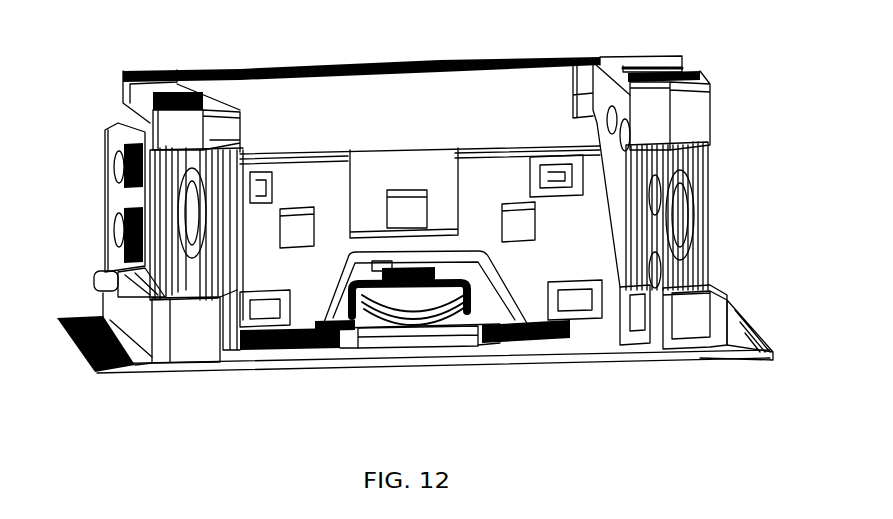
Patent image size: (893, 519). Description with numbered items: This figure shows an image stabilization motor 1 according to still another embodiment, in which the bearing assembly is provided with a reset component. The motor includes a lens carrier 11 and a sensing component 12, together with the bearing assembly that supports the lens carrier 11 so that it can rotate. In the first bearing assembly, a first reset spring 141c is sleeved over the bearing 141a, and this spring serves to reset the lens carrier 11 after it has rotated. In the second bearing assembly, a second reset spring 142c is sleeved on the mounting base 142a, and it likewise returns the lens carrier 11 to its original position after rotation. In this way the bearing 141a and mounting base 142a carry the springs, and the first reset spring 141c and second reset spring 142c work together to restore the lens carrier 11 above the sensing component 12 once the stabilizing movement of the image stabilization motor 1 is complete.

The image stabilization motor 1 is at (530, 36).
The lens carrier 11 is at (360, 82).
The sensing component 12 is at (598, 347).
The bearing 141a is at (368, 341).
The first reset spring 141c is at (473, 340).
The mounting base 142a is at (115, 203).
The second reset spring 142c is at (233, 233).